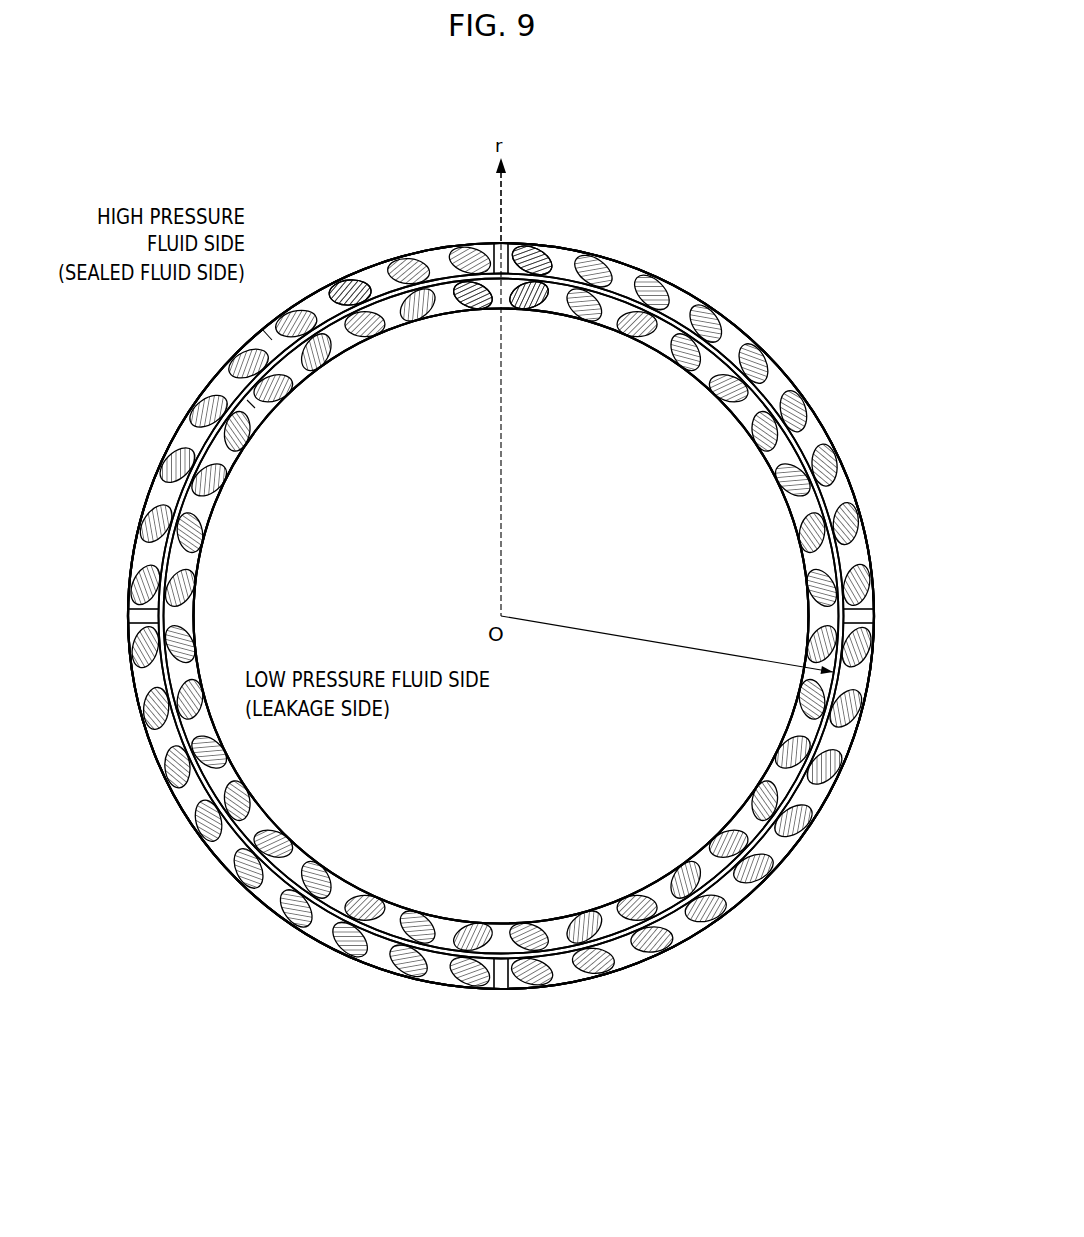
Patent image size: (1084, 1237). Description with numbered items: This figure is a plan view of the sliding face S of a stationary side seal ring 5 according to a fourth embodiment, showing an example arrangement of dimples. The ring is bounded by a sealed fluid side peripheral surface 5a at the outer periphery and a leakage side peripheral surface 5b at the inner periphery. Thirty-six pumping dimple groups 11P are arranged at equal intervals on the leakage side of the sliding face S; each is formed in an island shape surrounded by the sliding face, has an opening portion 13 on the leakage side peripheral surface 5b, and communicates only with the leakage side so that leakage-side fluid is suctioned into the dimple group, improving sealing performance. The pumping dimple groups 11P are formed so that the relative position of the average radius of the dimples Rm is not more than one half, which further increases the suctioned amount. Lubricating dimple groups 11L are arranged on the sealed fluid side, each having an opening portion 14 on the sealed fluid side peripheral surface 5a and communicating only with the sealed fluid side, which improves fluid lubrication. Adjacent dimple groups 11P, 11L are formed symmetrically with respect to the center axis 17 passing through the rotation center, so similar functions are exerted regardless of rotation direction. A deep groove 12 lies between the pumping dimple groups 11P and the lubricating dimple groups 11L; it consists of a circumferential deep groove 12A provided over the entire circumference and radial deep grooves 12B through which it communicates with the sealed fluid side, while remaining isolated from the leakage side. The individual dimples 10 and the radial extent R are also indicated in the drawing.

The stationary side seal ring 5 is at (797, 295).
The sealed fluid side peripheral surface 5a is at (846, 470).
The leakage side peripheral surface 5b is at (784, 497).
The dynamic pressure generation groove (dimple) 10 is at (648, 274).
The lubricating dimple group 11L is at (534, 236).
The pumping dimple group 11P is at (484, 318).
The deep groove 12 is at (433, 191).
The circumferential deep groove 12A is at (378, 262).
The radial deep groove 12B is at (476, 238).
The opening portion 13 is at (722, 388).
The opening portion 14 is at (762, 330).
The center axis 17 is at (497, 190).
The radial groove width R is at (250, 402).
The sliding face S is at (800, 369).
The average radius of the dimples (R mean) Rm is at (667, 642).